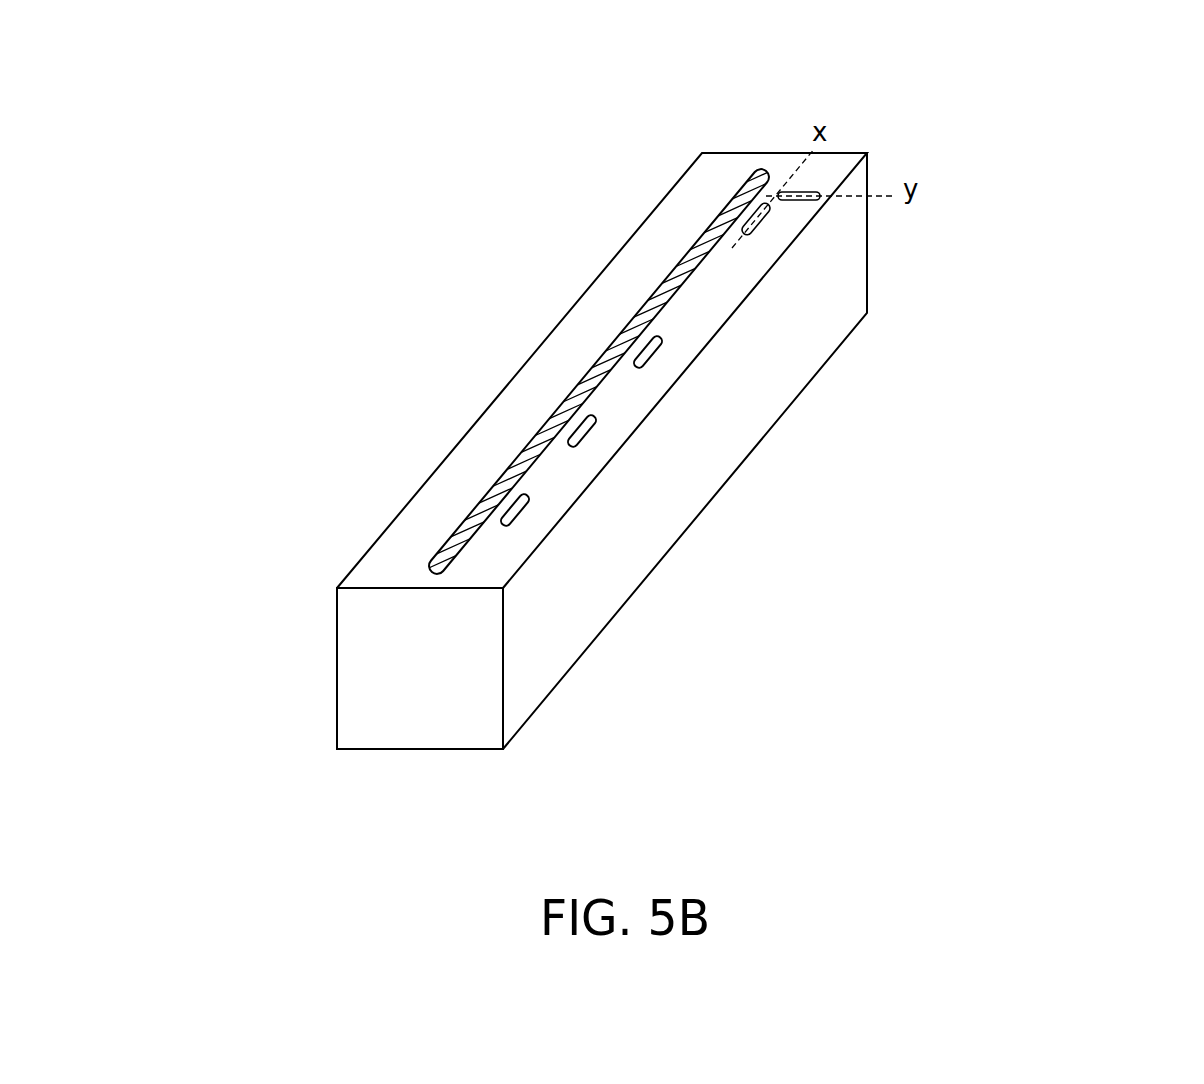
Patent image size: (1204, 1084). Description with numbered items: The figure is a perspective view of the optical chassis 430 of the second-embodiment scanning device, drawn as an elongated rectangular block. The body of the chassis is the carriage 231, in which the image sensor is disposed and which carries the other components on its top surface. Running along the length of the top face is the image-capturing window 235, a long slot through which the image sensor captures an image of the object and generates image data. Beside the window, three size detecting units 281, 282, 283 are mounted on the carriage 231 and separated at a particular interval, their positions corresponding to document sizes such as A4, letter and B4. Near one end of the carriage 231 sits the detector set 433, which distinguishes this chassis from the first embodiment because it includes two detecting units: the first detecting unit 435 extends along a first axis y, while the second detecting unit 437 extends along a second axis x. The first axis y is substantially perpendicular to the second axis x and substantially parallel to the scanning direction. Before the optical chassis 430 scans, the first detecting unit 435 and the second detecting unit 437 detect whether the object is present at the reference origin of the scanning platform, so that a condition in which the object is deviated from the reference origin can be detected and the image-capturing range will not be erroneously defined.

The optical chassis 430 is at (1195, 100).
The carriage 231 is at (382, 558).
The image-capturing window 235 is at (682, 260).
The size detecting unit 281 is at (640, 359).
The size detecting unit 282 is at (574, 438).
The size detecting unit 283 is at (507, 516).
The detector set 433 is at (692, 164).
The first detecting unit 435 is at (783, 192).
The second detecting unit 437 is at (748, 203).